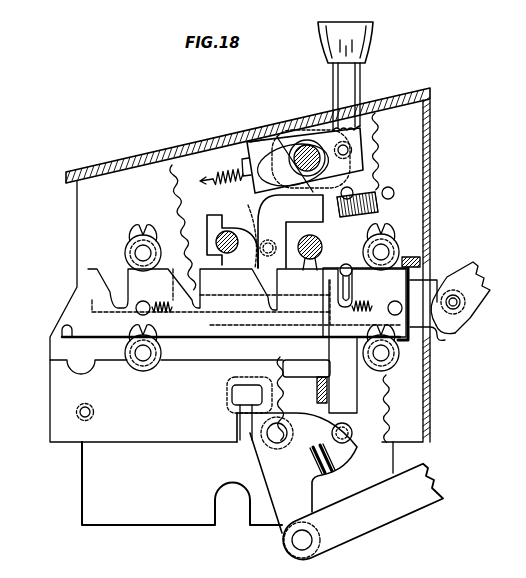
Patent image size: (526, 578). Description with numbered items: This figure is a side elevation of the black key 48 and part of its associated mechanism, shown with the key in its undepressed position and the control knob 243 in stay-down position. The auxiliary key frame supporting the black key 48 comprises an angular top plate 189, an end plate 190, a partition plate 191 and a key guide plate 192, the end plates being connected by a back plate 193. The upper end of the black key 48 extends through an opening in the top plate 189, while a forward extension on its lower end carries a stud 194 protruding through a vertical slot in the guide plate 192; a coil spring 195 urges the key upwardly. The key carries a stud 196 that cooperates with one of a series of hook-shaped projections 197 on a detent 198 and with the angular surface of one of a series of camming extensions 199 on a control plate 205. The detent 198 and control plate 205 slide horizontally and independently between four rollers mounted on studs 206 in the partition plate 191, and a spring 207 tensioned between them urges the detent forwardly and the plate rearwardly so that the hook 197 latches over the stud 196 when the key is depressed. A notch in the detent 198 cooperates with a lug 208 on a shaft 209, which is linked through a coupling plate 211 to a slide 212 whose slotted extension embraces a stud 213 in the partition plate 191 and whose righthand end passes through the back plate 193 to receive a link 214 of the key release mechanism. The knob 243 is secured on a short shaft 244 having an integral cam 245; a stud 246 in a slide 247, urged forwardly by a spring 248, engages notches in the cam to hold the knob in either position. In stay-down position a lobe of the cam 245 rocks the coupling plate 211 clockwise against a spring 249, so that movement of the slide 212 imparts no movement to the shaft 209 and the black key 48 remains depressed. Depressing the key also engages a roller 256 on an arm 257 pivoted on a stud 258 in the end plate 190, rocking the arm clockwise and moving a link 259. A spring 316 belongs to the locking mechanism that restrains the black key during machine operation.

The black key 48 is at (371, 45).
The angular top plate 189 is at (153, 150).
The end plate 190 is at (88, 492).
The partition plate 191 is at (77, 201).
The key guide plate 192 is at (75, 440).
The back plate 193 is at (430, 403).
The stud 194 is at (232, 398).
The coil spring 195 is at (356, 195).
The stud 196 is at (346, 264).
The hook-shaped projection 197 is at (357, 282).
The detent 198 is at (428, 330).
The camming extension 199 is at (322, 312).
The control plate 205 is at (334, 350).
The stud 206 is at (143, 253).
The spring 207 is at (162, 302).
The lug 208 is at (368, 215).
The shaft 209 is at (318, 232).
The coupling plate 211 is at (245, 340).
The slide 212 is at (174, 222).
The stud 213 is at (215, 215).
The link 214 is at (476, 300).
The control knob 243 is at (262, 112).
The short shaft 244 is at (310, 160).
The cam 245 is at (262, 125).
The stud 246 is at (366, 135).
The slide 247 is at (250, 136).
The spring 248 is at (214, 172).
The spring 249 is at (252, 235).
The roller 256 is at (342, 433).
The arm 257 is at (266, 472).
The stud 258 is at (270, 445).
The link 259 is at (412, 500).
The spring 316 is at (422, 268).